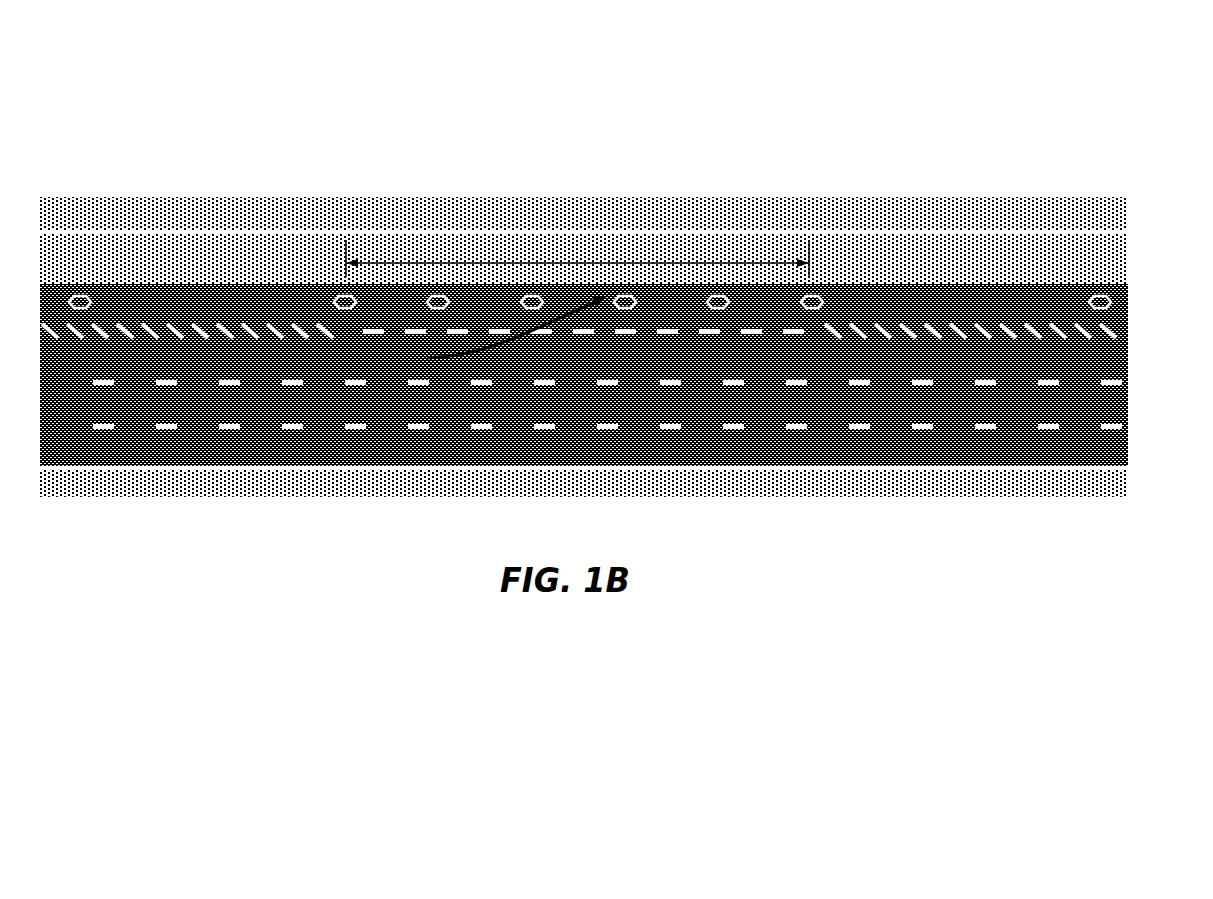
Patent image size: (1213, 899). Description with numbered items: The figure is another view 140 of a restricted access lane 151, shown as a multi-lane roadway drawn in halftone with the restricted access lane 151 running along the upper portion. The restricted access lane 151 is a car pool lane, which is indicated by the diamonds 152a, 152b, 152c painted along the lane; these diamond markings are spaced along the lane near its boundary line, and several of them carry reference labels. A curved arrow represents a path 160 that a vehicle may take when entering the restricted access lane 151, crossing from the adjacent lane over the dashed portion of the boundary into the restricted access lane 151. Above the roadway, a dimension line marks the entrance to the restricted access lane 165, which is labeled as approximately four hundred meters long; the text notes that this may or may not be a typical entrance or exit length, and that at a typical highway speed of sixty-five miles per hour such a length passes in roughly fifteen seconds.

The view 140 is at (1113, 84).
The restricted access lane 151 is at (895, 305).
The diamond 152a is at (345, 312).
The diamond 152b is at (625, 312).
The diamond 152c is at (718, 312).
The path 160 is at (490, 347).
The entrance to the restricted access lane 165 is at (577, 255).